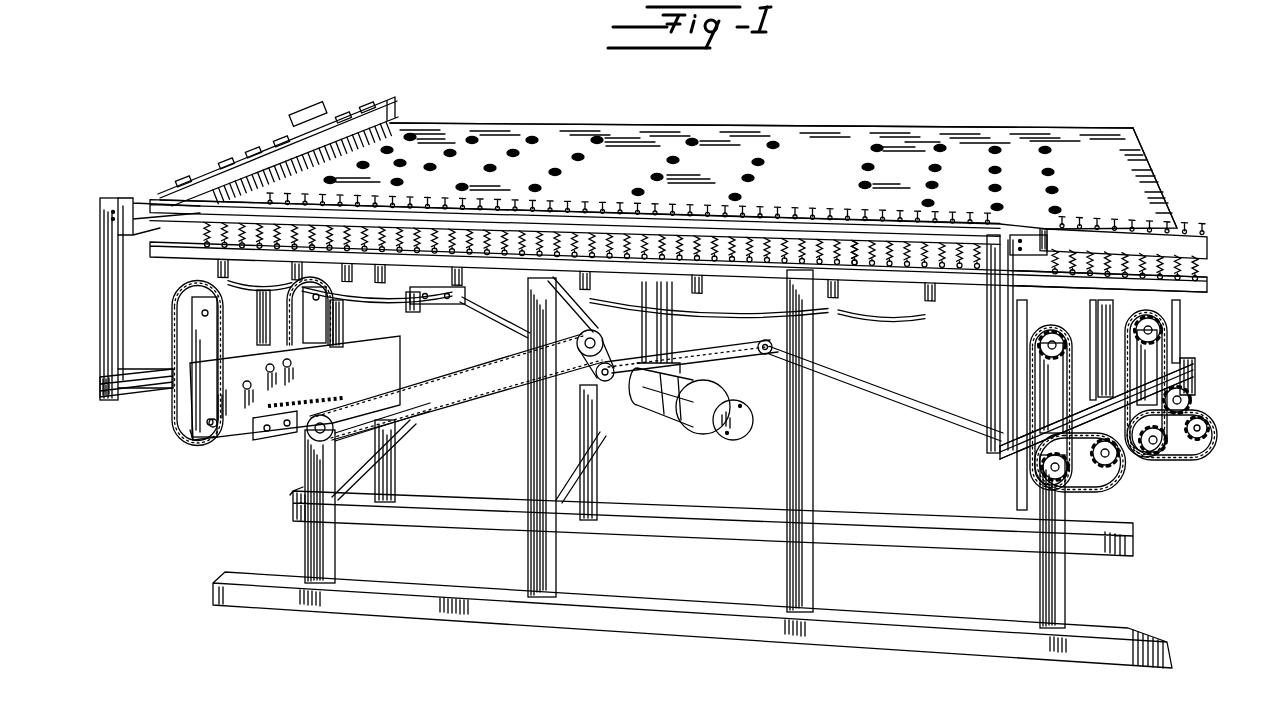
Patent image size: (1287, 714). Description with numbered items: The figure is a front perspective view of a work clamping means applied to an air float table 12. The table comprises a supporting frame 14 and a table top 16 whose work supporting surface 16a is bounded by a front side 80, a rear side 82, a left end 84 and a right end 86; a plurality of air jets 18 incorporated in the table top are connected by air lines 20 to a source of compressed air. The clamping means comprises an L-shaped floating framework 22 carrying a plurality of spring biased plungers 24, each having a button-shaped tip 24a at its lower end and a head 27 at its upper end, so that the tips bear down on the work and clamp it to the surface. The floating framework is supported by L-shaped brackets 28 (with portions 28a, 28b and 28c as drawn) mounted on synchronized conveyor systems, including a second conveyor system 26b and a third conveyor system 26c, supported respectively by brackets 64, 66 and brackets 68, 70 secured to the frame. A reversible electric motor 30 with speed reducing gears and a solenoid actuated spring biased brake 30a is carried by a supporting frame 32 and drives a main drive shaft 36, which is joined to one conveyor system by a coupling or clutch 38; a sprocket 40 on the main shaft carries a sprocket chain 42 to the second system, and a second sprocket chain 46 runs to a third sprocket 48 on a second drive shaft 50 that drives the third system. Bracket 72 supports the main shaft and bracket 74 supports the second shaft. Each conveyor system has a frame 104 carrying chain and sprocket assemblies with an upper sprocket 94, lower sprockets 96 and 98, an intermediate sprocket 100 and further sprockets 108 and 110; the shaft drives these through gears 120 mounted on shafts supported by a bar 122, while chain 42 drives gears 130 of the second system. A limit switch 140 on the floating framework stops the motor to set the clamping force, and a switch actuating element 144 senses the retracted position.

The air float table 12 is at (681, 155).
The supporting frame 14 is at (659, 650).
The table top 16 is at (183, 258).
The work supporting surface 16a is at (627, 137).
The air jets 18 is at (772, 143).
The air lines 20 is at (927, 300).
The floating framework 22 is at (397, 102).
The spring biased plungers 24 is at (395, 122).
The button-shaped tip 24a is at (862, 280).
The second conveyor system 26b is at (168, 442).
The third conveyor system 26c is at (1144, 405).
The head 27 is at (394, 98).
The L-shaped brackets 28 is at (103, 411).
The support bar flange 28a is at (155, 400).
The upright column 28b is at (100, 321).
The mounting plate 28c is at (1196, 376).
The electric motor 30 is at (699, 425).
The solenoid actuated spring biased brake 30a is at (731, 440).
The supporting frame 32 is at (672, 325).
The main drive shaft 36 is at (508, 323).
The coupling or clutch 38 is at (468, 293).
The sprocket 40 is at (600, 375).
The sprocket chain 42 is at (507, 404).
The second sprocket chain 46 is at (743, 373).
The third sprocket 48 is at (767, 340).
The second drive shaft 50 is at (937, 404).
The bracket 64 is at (350, 367).
The bracket 66 is at (263, 294).
The bracket 68 is at (1180, 337).
The bracket 70 is at (1098, 313).
The bracket 72 is at (577, 306).
The bracket 74 is at (815, 421).
The front side 80 is at (1210, 287).
The rear side 82 is at (860, 125).
The left end 84 is at (175, 220).
The right end 86 is at (1155, 167).
The upper sprocket 94 is at (1124, 410).
The lower sprocket 96 is at (1144, 458).
The lower sprocket 98 is at (1160, 452).
The intermediate sprocket 100 is at (1180, 400).
The frame 104 is at (228, 411).
The gear 108 is at (1123, 467).
The gear 110 is at (1068, 480).
The gears 120 is at (418, 304).
The bar 122 is at (262, 441).
The gears 130 is at (290, 438).
The limit switch 140 is at (200, 163).
The switch actuating element 144 is at (247, 143).